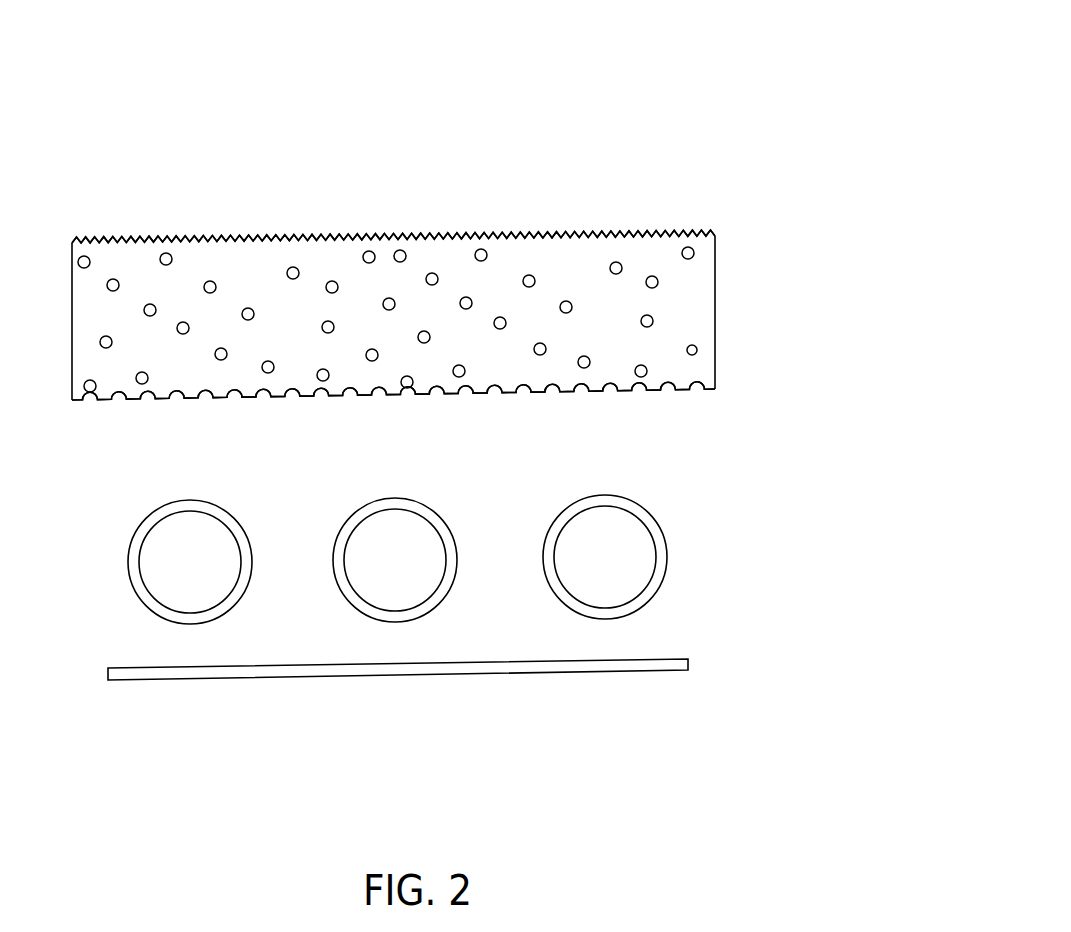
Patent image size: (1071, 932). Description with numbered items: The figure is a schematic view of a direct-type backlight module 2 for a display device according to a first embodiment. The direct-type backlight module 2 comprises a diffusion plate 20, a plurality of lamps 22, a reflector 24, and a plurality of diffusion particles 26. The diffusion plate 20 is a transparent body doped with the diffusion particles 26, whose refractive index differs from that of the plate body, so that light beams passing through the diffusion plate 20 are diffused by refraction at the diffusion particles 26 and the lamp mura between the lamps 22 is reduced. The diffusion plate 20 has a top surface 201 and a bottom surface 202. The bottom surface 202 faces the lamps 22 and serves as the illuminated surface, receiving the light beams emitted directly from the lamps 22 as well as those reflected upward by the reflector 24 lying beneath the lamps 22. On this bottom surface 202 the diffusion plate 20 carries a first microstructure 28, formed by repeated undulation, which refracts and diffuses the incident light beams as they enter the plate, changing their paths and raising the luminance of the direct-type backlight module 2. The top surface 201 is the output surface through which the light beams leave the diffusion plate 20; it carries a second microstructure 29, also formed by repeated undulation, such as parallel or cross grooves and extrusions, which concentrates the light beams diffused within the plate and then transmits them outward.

The direct-type backlight module 2 is at (740, 118).
The diffusion plate 20 is at (693, 293).
The top surface 201 is at (542, 237).
The bottom surface 202 is at (545, 390).
The diffusion particles 26 is at (698, 348).
The first microstructure 28 is at (553, 390).
The second microstructure 29 is at (512, 237).
The lamps 22 is at (663, 556).
The reflector 24 is at (688, 663).